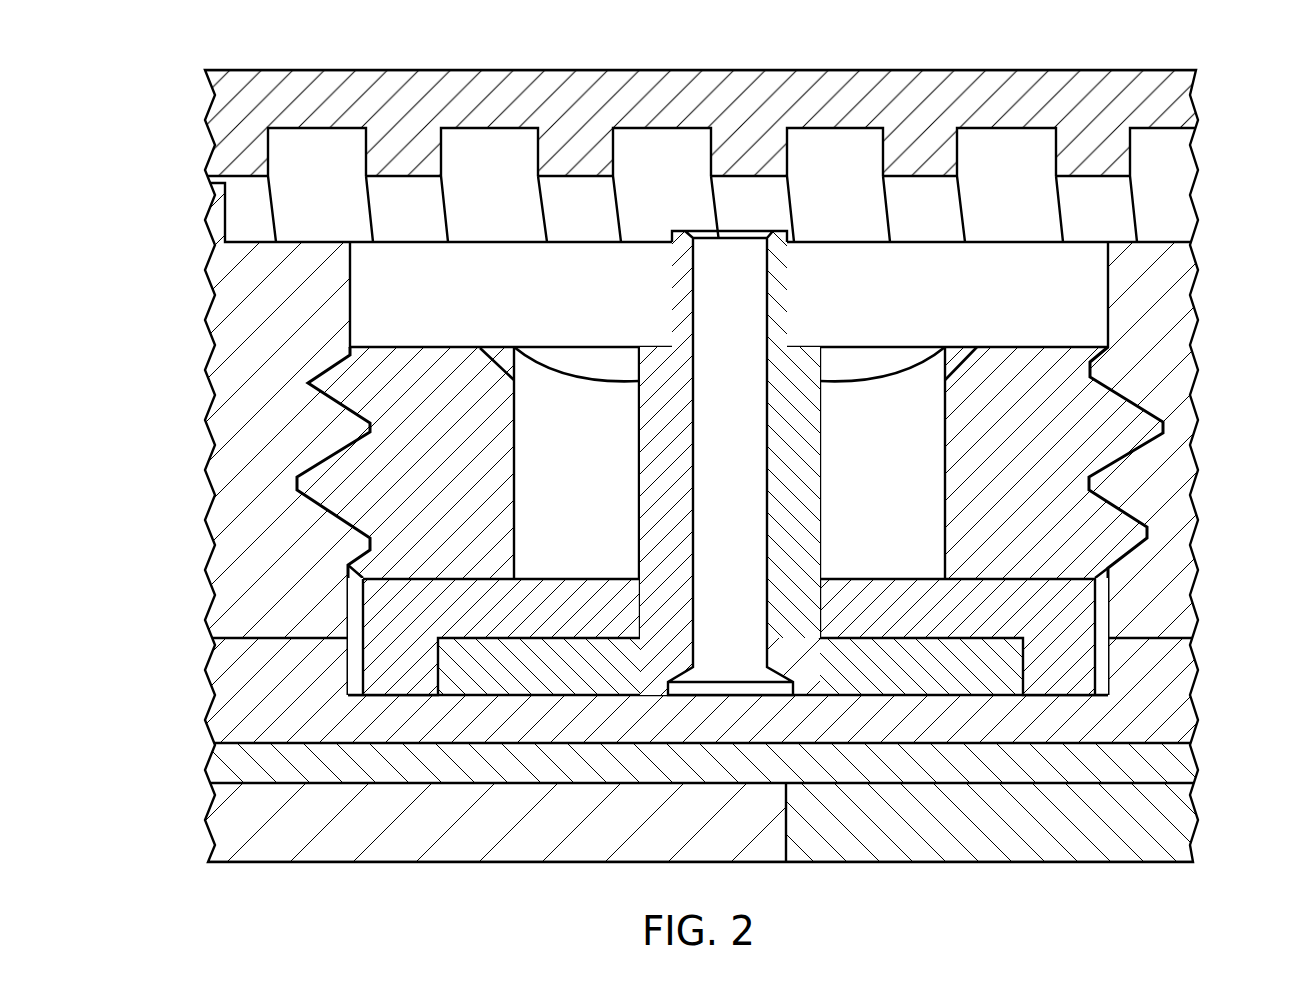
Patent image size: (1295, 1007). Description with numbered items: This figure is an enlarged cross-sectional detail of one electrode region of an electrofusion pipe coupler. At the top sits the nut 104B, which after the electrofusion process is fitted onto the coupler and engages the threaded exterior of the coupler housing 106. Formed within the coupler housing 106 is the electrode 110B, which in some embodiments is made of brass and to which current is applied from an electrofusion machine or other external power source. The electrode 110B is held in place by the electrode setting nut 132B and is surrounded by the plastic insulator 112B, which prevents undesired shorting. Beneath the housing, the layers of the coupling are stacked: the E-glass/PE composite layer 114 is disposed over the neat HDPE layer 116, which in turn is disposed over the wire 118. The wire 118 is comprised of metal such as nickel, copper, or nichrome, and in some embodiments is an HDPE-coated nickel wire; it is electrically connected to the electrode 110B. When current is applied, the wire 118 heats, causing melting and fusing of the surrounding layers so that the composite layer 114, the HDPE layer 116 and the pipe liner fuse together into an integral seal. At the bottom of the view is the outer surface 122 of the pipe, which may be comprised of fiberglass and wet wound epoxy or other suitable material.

The nut 104B is at (393, 82).
The coupler housing 106 is at (218, 315).
The electrode 110B is at (732, 248).
The electrode setting nut 132B is at (432, 355).
The plastic insulator 112B is at (903, 587).
The E-glass/PE composite layer 114 is at (1182, 695).
The neat HDPE layer 116 is at (1192, 763).
The wire 118 is at (213, 810).
The outer surface 122 is at (1190, 822).